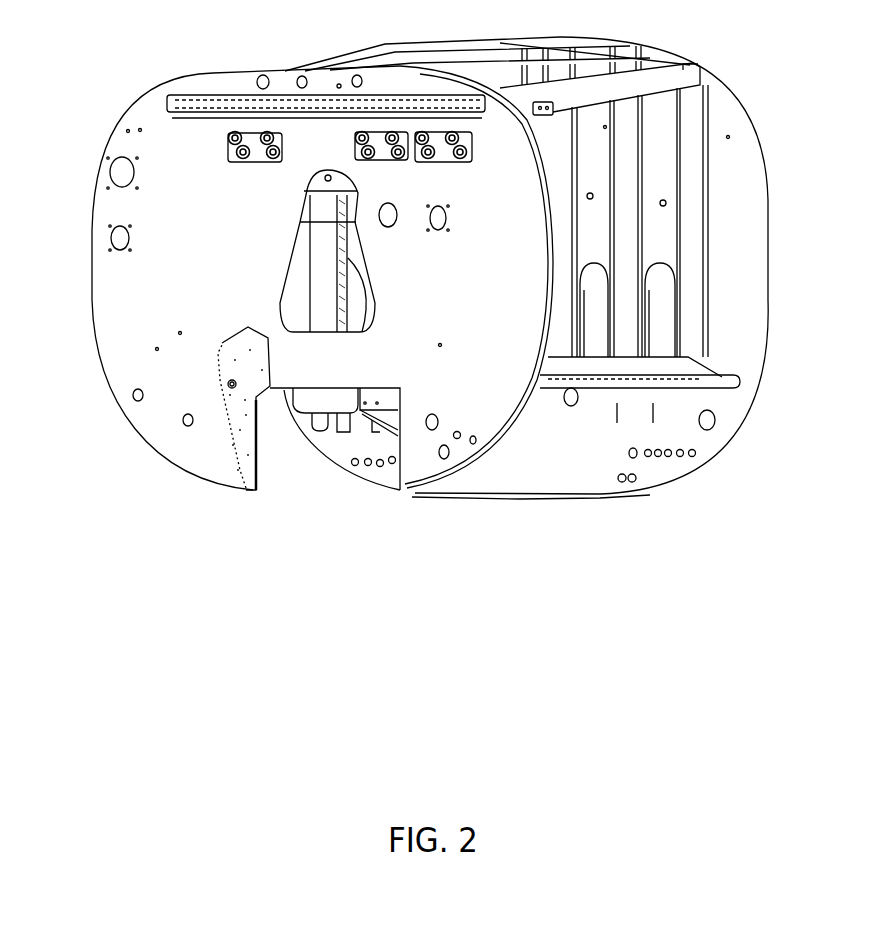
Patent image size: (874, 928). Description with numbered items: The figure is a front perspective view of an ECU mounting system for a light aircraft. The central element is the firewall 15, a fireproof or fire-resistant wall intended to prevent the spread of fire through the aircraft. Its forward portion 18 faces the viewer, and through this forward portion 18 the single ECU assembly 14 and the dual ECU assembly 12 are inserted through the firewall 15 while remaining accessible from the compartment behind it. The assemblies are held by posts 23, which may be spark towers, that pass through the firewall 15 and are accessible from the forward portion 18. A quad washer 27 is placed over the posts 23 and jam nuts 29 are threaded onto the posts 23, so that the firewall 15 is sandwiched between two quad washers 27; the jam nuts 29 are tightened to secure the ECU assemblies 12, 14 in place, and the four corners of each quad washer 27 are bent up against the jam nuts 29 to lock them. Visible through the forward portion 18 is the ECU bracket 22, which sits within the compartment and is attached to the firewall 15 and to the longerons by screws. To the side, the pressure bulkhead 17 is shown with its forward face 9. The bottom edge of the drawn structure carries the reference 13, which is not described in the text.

The forward face 9 is at (742, 292).
The dual ECU assembly 12 is at (437, 190).
The floor 13 is at (490, 528).
The single ECU assembly 14 is at (224, 165).
The firewall 15 is at (262, 491).
The pressure bulkhead 17 is at (705, 481).
The forward portion 18 is at (177, 395).
The ECU bracket 22 is at (330, 213).
The posts 23 is at (358, 176).
The quad washer 27 is at (371, 156).
The jam nuts 29 is at (402, 154).